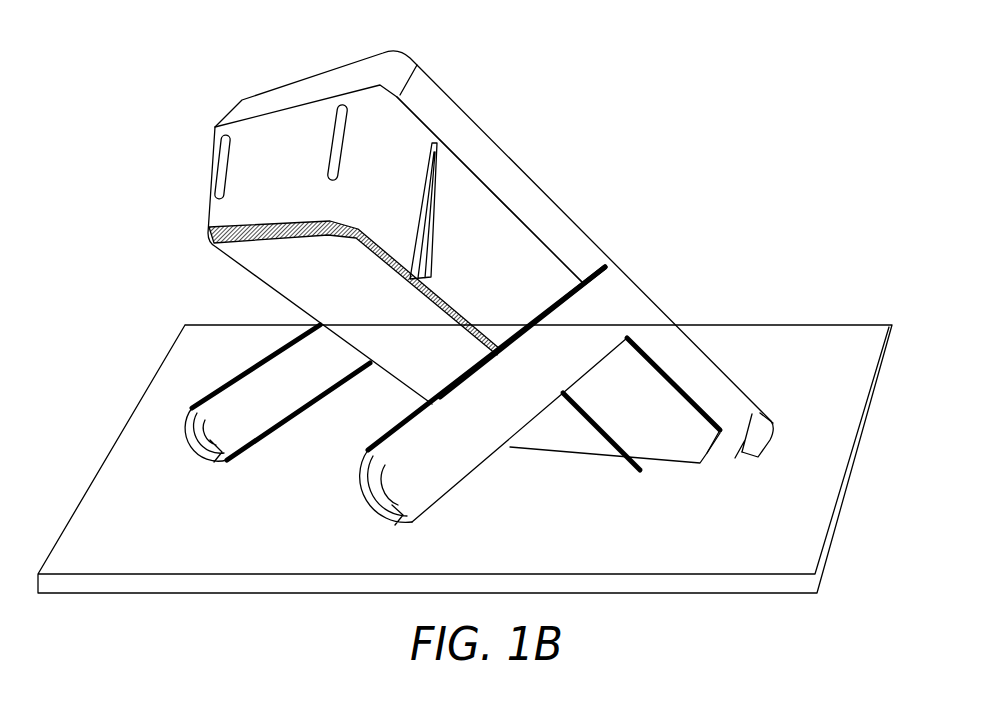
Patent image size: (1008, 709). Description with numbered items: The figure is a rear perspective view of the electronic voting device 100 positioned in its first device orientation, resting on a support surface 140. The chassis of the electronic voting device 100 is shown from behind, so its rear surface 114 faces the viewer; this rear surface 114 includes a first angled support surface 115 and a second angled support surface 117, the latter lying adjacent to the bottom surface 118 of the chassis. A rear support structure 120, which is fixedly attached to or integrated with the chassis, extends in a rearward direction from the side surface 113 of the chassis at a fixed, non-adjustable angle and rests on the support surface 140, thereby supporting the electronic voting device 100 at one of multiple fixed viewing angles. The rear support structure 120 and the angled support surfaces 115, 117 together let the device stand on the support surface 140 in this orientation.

The electronic voting device 100 is at (690, 123).
The side surface 113 is at (492, 234).
The rear surface 114 is at (415, 374).
The first angled support surface 115 is at (678, 470).
The second angled support surface 117 is at (208, 181).
The bottom surface 118 is at (295, 85).
The rear support structure 120 is at (250, 422).
The support surface 140 is at (136, 560).